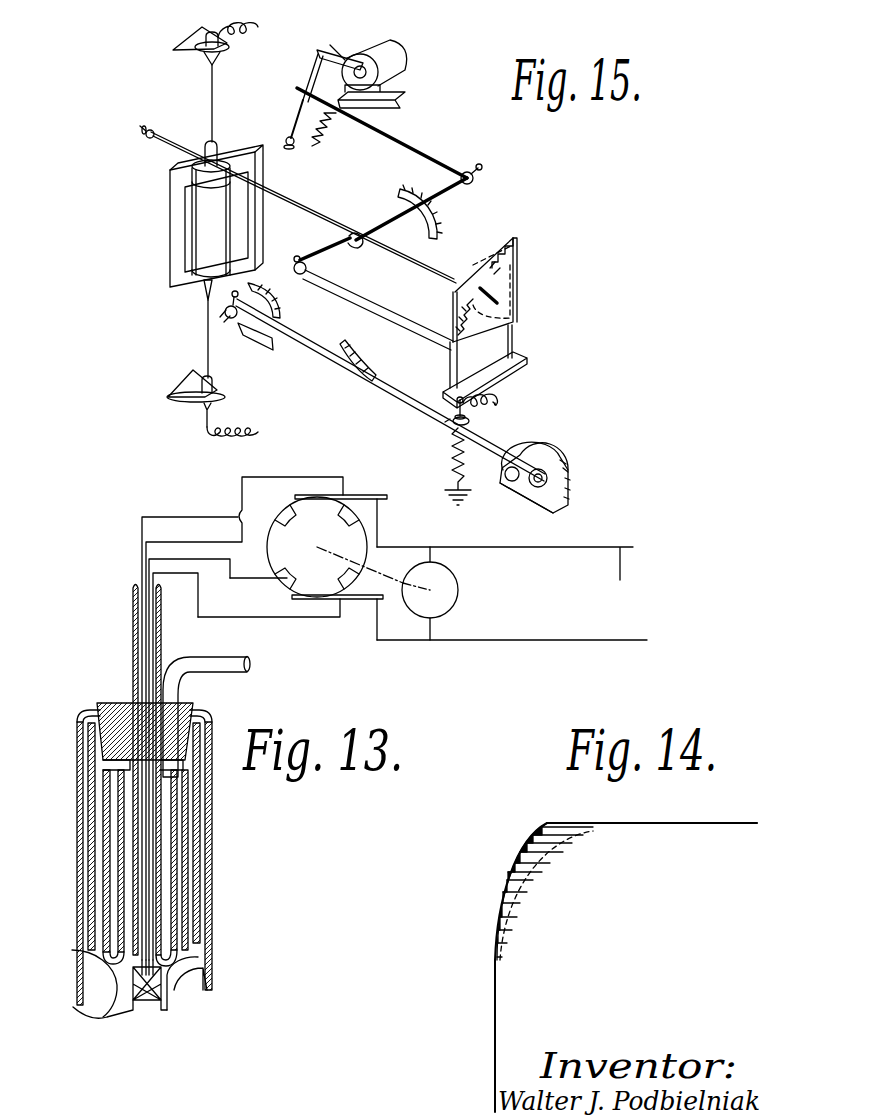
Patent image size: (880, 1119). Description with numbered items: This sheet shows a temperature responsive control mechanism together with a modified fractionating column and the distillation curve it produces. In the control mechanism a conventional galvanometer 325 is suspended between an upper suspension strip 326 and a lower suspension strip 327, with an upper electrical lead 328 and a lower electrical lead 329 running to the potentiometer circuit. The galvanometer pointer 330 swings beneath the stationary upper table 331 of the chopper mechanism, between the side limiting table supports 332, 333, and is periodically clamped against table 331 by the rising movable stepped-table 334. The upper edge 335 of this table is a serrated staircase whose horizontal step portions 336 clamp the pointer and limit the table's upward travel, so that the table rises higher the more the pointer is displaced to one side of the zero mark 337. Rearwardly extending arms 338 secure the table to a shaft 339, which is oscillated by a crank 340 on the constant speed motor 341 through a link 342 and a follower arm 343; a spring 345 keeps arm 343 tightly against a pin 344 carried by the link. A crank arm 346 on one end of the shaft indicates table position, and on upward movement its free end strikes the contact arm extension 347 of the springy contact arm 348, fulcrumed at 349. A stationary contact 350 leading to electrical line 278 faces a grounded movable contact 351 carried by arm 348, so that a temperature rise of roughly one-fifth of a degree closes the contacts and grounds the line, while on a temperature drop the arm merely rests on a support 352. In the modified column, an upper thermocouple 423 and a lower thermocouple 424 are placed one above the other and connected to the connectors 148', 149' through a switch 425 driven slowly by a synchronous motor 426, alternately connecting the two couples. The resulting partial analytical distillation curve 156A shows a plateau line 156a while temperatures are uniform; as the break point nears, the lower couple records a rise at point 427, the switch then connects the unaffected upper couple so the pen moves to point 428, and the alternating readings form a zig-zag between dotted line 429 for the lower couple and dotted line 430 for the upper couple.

In FIG. 15, the galvanometer 325 is at (238, 150).
In FIG. 15, the upper suspension strip 326 is at (209, 90).
In FIG. 15, the lower suspension strip 327 is at (205, 332).
In FIG. 15, the upper electrical lead 328 is at (227, 44).
In FIG. 15, the lower electrical lead 329 is at (247, 423).
In FIG. 15, the galvanometer pointer 330 is at (160, 140).
In FIG. 15, the stationary upper table 331 is at (452, 300).
In FIG. 15, the side limiting table support 332 is at (450, 370).
In FIG. 15, the side limiting table support 333 is at (514, 345).
In FIG. 15, the movable stepped-table 334 is at (512, 298).
In FIG. 15, the upper edge 335 is at (458, 330).
In FIG. 15, the horizontal step portions 336 is at (515, 320).
In FIG. 15, the zero mark 337 is at (473, 285).
In FIG. 15, the rearwardly extending arms 338 is at (385, 280).
In FIG. 15, the shaft 339 is at (323, 257).
In FIG. 15, the crank 340 is at (337, 57).
In FIG. 15, the constant speed motor 341 is at (403, 55).
In FIG. 15, the link 342 is at (313, 68).
In FIG. 15, the follower arm 343 is at (412, 144).
In FIG. 15, the pin 344 is at (300, 99).
In FIG. 15, the spring 345 is at (326, 134).
In FIG. 15, the crank arm 346 is at (307, 332).
In FIG. 15, the contact arm extension 347 is at (372, 383).
In FIG. 15, the contact arm 348 is at (440, 421).
In FIG. 15, the fulcrum 349 is at (571, 467).
In FIG. 15, the stationary contact 350 is at (488, 414).
In FIG. 15, the grounded movable contact 351 is at (468, 422).
In FIG. 15, the support 352 is at (503, 472).
In FIG. 15, the electrical line 278 is at (495, 402).
In FIG. 13, the switch 425 is at (353, 540).
In FIG. 13, the synchronous motor 426 is at (460, 588).
In FIG. 13, the connector 149' is at (519, 569).
In FIG. 13, the connector 148' is at (519, 622).
In FIG. 13, the upper thermocouple 423 is at (143, 800).
In FIG. 13, the lower thermocouple 424 is at (150, 912).
In FIG. 14, the point 427 is at (552, 860).
In FIG. 14, the point 428 is at (517, 848).
In FIG. 14, the dotted line 429 is at (520, 903).
In FIG. 14, the dotted line 430 is at (500, 887).
In FIG. 14, the partial analytical distillation curve 156A is at (480, 1018).
In FIG. 14, the plateau line 156a is at (493, 1100).